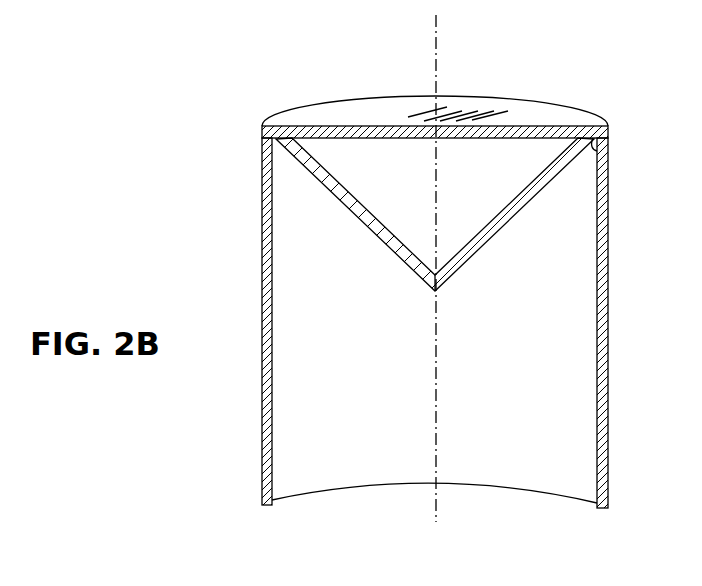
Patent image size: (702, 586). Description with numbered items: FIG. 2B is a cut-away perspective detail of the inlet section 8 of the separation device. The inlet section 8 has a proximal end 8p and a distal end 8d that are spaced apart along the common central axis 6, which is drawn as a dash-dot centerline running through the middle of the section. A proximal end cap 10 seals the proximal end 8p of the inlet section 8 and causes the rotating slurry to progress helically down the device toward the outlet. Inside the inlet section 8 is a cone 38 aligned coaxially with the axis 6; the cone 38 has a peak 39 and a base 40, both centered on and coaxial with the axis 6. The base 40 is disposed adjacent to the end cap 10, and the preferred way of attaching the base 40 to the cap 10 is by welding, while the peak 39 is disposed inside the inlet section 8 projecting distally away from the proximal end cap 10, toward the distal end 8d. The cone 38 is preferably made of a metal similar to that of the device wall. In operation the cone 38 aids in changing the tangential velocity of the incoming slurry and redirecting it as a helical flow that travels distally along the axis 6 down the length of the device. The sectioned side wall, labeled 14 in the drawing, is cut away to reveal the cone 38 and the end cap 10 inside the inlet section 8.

The axis 6 is at (436, 45).
The inlet section 8 is at (210, 233).
The proximal end 8p is at (608, 126).
The distal end 8d is at (505, 482).
The proximal end cap 10 is at (550, 117).
The side wall of housing 14 is at (262, 401).
The cone 38 is at (365, 218).
The peak 39 is at (437, 291).
The base 40 is at (597, 149).